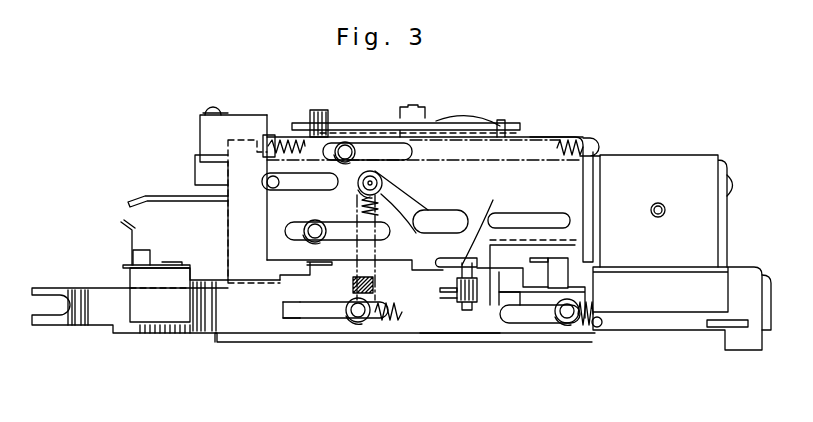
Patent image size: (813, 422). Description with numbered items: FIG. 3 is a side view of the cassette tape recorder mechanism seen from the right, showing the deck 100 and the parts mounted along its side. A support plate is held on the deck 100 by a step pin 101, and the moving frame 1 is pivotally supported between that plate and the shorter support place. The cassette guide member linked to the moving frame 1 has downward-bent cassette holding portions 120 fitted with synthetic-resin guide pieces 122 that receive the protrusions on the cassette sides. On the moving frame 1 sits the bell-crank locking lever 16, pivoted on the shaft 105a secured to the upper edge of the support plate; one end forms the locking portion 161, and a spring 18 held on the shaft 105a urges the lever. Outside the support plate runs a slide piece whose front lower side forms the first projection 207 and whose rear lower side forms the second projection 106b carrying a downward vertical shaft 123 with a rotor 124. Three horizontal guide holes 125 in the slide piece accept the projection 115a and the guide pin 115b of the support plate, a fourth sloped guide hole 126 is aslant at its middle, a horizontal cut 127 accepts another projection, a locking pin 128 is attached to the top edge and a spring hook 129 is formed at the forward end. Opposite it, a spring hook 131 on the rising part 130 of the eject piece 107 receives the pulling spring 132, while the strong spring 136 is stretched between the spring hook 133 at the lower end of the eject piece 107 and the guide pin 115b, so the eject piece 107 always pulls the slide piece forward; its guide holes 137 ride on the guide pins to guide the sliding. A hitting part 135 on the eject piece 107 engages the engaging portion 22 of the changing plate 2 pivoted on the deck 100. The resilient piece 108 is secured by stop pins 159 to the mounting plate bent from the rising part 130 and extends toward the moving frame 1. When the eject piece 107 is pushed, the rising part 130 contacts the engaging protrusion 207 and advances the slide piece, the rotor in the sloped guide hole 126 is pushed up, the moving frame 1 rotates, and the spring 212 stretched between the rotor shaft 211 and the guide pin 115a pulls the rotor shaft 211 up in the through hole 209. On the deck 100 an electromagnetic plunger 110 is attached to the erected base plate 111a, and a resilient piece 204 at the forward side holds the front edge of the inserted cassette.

The moving frame 1 is at (481, 124).
The changing plate 2 is at (543, 258).
The locking lever 16 is at (357, 118).
The spring 18 is at (456, 116).
The engaging portion 22 is at (565, 263).
The deck 100 is at (590, 281).
The step pin 101 is at (593, 175).
The shaft 105a is at (419, 98).
The second projection 106b is at (462, 260).
The eject piece 107 is at (248, 327).
The resilient piece 108 is at (200, 112).
The electromagnetic plunger 110 is at (693, 163).
The base plate 111a is at (729, 168).
The projection 115a is at (567, 325).
The guide pin 115b is at (358, 322).
The cassette holding portion 120 is at (145, 195).
The guide pieces 122 is at (200, 170).
The vertical shaft 123 is at (497, 219).
The rotor 124 is at (473, 300).
The horizontal guide holes 125 is at (383, 145).
The fourth sloped guide hole 126 is at (400, 184).
The horizontal cut 127 is at (322, 190).
The locking pin 128 is at (320, 110).
The spring hook 129 is at (593, 142).
The rising part 130 is at (228, 240).
The spring hook 131 is at (270, 115).
The pulling spring 132 is at (543, 135).
The spring hook 133 is at (597, 327).
The hitting part 135 is at (498, 300).
The strong spring 136 is at (438, 330).
The guide holes 137 is at (318, 320).
The stop pins 159 is at (212, 109).
The locking portion 161 is at (300, 115).
The resilient piece 204 is at (128, 238).
The first projection 207 is at (318, 262).
The through hole 209 is at (440, 226).
The rotor shaft 211 is at (376, 183).
The spring 212 is at (400, 320).